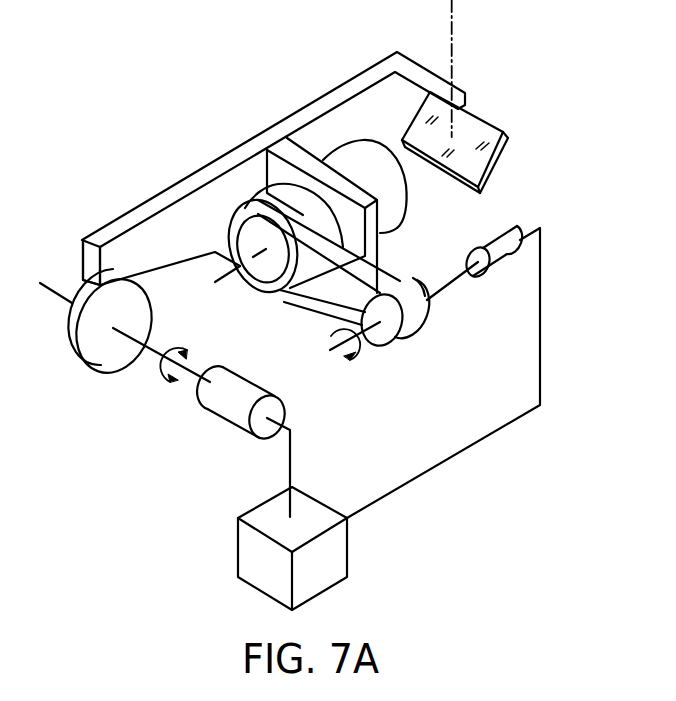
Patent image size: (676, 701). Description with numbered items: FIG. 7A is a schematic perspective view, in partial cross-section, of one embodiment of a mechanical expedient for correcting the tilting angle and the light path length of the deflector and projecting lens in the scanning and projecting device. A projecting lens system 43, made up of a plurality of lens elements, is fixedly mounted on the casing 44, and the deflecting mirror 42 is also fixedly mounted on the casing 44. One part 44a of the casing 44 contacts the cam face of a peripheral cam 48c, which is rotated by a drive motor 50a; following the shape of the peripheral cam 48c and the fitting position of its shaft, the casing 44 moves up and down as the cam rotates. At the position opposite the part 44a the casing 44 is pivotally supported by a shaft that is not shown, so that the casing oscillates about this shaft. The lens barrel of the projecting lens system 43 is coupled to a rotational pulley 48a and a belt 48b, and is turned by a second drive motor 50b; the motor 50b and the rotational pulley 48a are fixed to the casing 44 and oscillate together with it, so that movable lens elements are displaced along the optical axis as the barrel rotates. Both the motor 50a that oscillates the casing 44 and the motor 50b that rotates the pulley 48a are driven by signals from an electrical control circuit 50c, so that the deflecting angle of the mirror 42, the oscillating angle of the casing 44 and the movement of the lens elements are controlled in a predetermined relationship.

The deflecting mirror 42 is at (500, 157).
The projecting lens system 43 is at (410, 218).
The casing 44 is at (312, 102).
The part of the casing 44a is at (110, 255).
The rotational pulley 48a is at (388, 348).
The belt 48b is at (292, 306).
The peripheral cam 48c is at (102, 375).
The drive motor 50a is at (215, 417).
The drive motor 50b is at (503, 277).
The electrical control circuit 50c is at (348, 553).